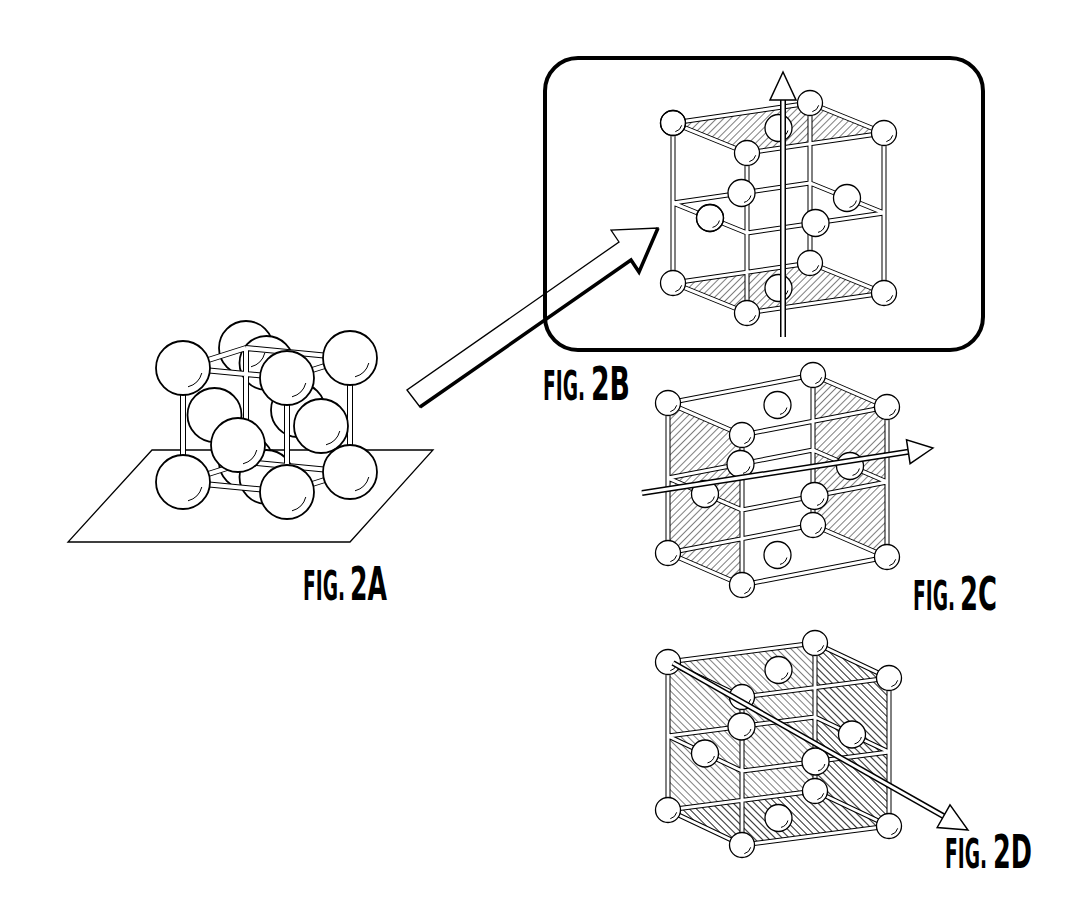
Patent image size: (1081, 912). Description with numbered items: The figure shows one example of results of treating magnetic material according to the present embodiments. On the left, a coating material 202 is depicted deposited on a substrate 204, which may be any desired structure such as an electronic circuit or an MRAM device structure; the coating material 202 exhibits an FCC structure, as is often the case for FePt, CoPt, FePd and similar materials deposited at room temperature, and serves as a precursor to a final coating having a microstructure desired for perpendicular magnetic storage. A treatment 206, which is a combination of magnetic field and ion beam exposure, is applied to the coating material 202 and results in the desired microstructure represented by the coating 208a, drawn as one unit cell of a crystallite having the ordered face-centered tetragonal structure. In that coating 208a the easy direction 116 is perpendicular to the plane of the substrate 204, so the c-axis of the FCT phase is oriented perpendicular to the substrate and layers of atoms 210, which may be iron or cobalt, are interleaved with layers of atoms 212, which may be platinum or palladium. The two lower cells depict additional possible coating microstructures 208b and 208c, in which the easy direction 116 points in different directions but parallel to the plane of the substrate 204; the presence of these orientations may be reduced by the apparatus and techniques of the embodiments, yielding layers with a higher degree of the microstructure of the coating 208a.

In FIG. 2B, the easy direction 116 is at (810, 106).
In FIG. 2C, the easy direction 116 is at (893, 436).
In FIG. 2D, the easy direction 116 is at (900, 787).
In FIG. 2A, the coating material 202 is at (211, 306).
In FIG. 2A, the substrate 204 is at (217, 543).
In FIG. 2A, the treatment 206 is at (481, 338).
In FIG. 2B, the coating 208a is at (746, 53).
In FIG. 2C, the coating microstructure 208b is at (636, 545).
In FIG. 2D, the coating microstructure 208c is at (637, 733).
In FIG. 2B, the atoms 210 is at (666, 119).
In FIG. 2B, the atoms 212 is at (704, 209).